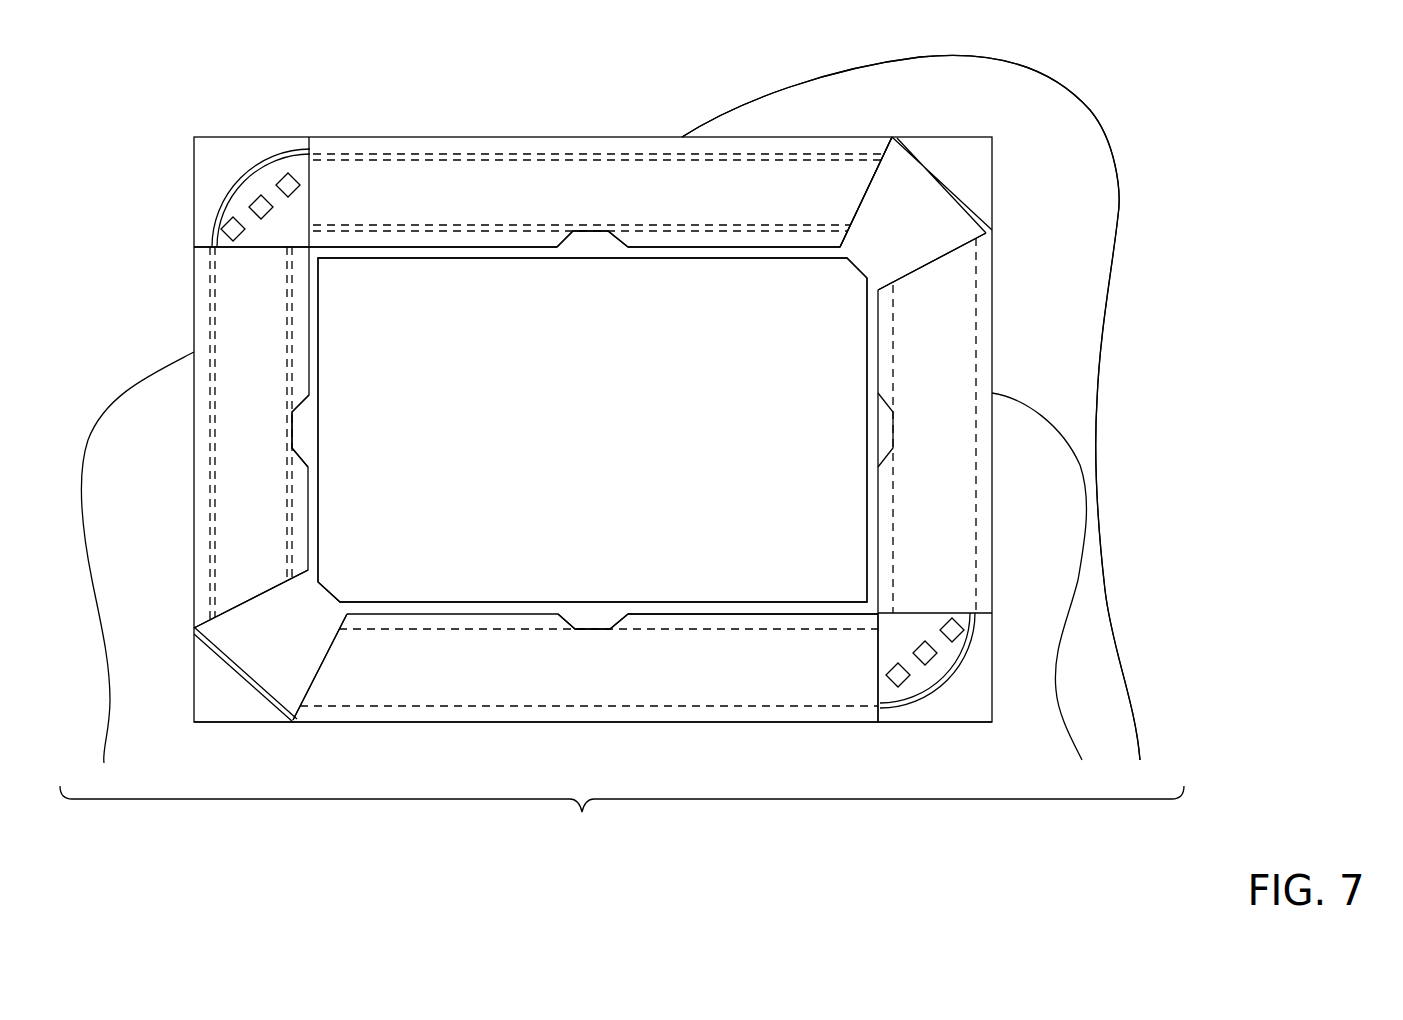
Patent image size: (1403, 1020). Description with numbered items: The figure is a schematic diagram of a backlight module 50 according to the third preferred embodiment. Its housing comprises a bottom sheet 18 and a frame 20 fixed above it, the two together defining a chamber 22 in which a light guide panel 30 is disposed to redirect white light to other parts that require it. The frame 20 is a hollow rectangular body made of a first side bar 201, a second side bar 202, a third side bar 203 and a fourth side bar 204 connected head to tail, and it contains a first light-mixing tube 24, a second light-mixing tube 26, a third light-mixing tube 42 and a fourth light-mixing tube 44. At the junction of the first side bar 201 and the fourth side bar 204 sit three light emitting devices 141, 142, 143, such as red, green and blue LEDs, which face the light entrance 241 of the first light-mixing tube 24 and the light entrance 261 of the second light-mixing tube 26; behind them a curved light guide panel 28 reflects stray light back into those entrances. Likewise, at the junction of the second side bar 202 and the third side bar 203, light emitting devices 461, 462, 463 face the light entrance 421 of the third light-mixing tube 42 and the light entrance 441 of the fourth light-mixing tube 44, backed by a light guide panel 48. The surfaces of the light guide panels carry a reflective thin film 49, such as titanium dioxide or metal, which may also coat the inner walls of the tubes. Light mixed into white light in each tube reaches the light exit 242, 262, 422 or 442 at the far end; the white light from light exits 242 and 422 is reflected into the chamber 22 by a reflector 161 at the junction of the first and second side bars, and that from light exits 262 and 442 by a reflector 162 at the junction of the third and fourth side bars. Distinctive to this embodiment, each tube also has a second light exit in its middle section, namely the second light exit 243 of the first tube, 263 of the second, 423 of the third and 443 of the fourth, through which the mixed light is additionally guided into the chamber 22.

The backlight module 50 is at (1223, 135).
The frame 20 is at (622, 493).
The bottom sheet 18 is at (643, 255).
The light guide panel 30 is at (847, 579).
The chamber 22 is at (687, 290).
The first light-mixing tube 24 is at (825, 182).
The second light-mixing tube 26 is at (237, 415).
The light guide panel 28 is at (263, 162).
The third light-mixing tube 42 is at (948, 355).
The fourth light-mixing tube 44 is at (762, 658).
The light guide panel 48 is at (945, 688).
The reflective thin film 49 is at (553, 152).
The light emitting device 141 is at (233, 229).
The light emitting device 142 is at (261, 207).
The light emitting device 143 is at (288, 185).
The reflector 161 is at (977, 212).
The reflector 162 is at (252, 683).
The first side bar 201 is at (926, 420).
The second side bar 202 is at (1047, 588).
The third side bar 203 is at (400, 722).
The fourth side bar 204 is at (132, 572).
The light entrance 241 is at (313, 188).
The light exit 242 is at (873, 198).
The second light exit 243 is at (592, 250).
The light entrance 261 is at (247, 252).
The light exit 262 is at (247, 608).
The second light exit 263 is at (316, 430).
The light entrance 421 is at (930, 612).
The light exit 422 is at (922, 274).
The second light exit 423 is at (868, 425).
The light entrance 441 is at (873, 665).
The light exit 442 is at (332, 670).
The second light exit 443 is at (592, 608).
The light emitting device 461 is at (898, 675).
The light emitting device 462 is at (953, 678).
The light emitting device 463 is at (958, 637).